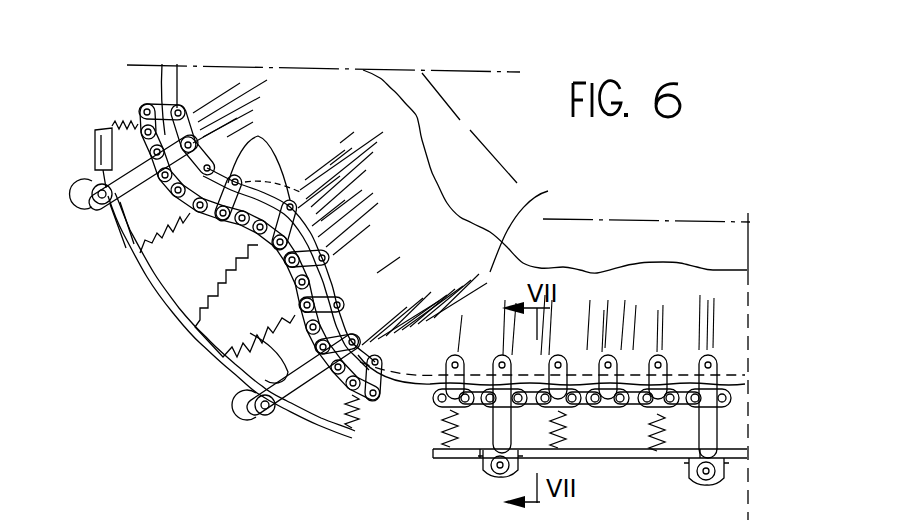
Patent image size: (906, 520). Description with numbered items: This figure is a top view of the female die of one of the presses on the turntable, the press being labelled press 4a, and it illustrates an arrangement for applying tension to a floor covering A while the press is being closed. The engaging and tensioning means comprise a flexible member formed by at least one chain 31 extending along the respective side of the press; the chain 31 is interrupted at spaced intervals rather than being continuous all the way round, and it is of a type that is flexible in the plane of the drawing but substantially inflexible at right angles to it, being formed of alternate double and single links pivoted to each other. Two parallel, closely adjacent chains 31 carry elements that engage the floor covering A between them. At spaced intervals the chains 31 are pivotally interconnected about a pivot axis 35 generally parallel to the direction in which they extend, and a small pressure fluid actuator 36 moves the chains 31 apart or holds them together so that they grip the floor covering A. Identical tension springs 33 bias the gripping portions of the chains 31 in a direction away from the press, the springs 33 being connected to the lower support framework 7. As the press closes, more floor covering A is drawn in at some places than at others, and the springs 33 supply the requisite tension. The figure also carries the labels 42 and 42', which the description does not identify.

The press 4a is at (680, 210).
The floor covering A is at (529, 224).
The lower support framework 7 is at (90, 192).
The chain 31 is at (633, 407).
The tension spring 33 is at (112, 122).
The pivot axis 35 is at (252, 333).
The pressure fluid actuator 36 is at (100, 207).
The product support 42 is at (264, 153).
The spring support 42' is at (381, 426).